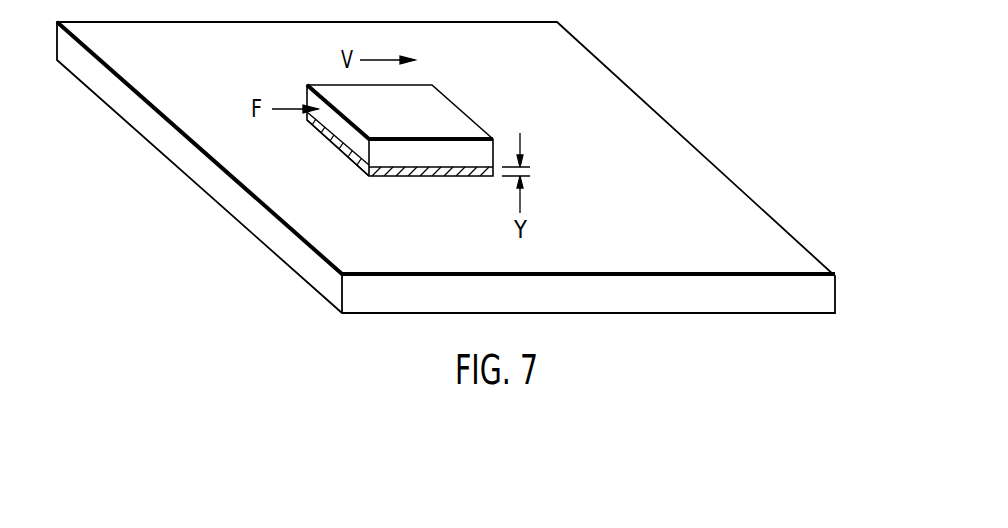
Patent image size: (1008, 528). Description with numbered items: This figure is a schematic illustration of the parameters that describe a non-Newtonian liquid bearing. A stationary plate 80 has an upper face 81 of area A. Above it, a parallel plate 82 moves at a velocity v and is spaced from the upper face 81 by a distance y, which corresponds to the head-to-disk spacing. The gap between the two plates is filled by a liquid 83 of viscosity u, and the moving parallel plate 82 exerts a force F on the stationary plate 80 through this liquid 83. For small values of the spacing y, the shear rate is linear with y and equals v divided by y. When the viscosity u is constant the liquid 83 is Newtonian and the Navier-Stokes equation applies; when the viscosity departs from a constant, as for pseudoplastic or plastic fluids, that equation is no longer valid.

The stationary plate 80 is at (835, 297).
The upper face 81 is at (740, 224).
The parallel plate 82 is at (432, 115).
The liquid 83 is at (350, 160).